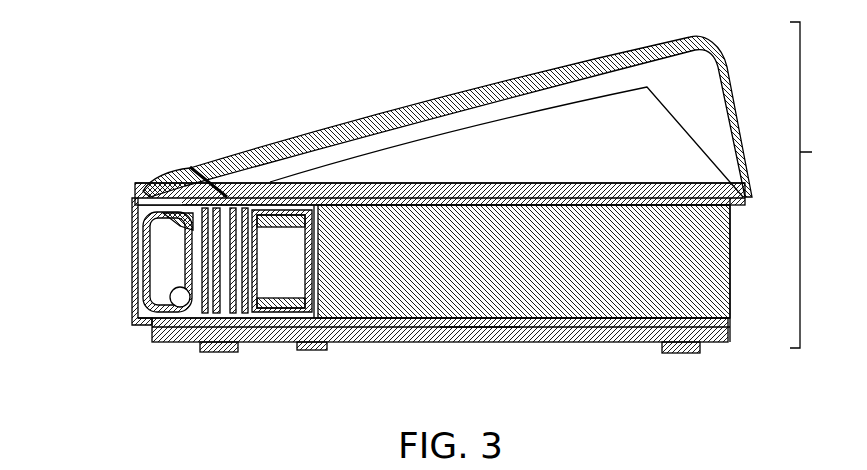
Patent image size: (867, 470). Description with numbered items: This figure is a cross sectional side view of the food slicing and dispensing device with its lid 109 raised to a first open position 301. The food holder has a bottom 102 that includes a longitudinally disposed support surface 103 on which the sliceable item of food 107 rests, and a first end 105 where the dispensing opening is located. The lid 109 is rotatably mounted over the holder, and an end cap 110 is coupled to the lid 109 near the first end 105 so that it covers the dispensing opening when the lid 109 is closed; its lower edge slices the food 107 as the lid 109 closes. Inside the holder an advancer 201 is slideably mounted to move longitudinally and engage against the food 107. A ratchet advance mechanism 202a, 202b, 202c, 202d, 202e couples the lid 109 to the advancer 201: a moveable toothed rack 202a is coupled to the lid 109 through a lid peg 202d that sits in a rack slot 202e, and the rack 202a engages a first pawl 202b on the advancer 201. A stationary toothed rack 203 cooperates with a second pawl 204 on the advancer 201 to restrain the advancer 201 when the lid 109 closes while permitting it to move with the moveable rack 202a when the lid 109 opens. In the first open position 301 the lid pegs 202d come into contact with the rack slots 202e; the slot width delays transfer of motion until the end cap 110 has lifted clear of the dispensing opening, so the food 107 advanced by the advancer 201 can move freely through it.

The end cap 110 is at (740, 105).
The lid 109 is at (275, 148).
The sliceable item of food 107 is at (715, 233).
The first end 105 is at (735, 282).
The advancer 201 is at (318, 282).
The support surface 103 is at (483, 328).
The bottom 102 is at (620, 337).
The stationary toothed rack 203 is at (650, 345).
The second pawl 204 is at (290, 328).
The moveable toothed rack 202a is at (140, 222).
The first pawl 202b is at (186, 166).
The hinge base 202c is at (198, 345).
The lid peg 202d is at (140, 324).
The rack slot 202e is at (140, 278).
The first open position 301 is at (827, 185).